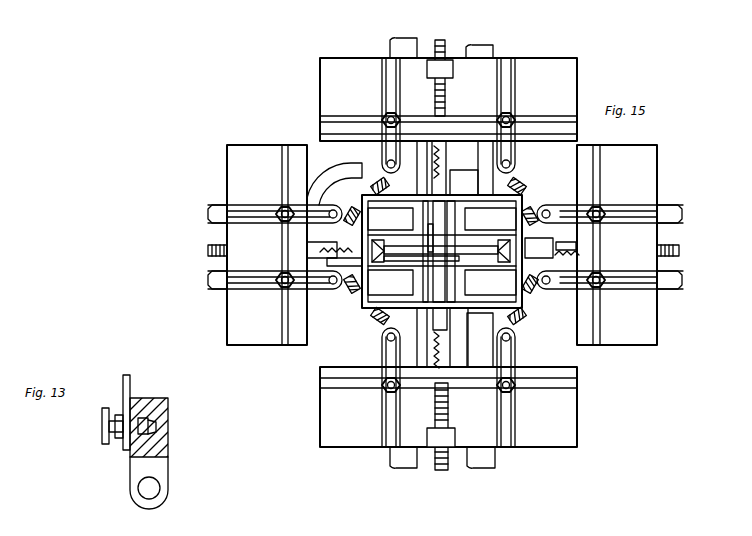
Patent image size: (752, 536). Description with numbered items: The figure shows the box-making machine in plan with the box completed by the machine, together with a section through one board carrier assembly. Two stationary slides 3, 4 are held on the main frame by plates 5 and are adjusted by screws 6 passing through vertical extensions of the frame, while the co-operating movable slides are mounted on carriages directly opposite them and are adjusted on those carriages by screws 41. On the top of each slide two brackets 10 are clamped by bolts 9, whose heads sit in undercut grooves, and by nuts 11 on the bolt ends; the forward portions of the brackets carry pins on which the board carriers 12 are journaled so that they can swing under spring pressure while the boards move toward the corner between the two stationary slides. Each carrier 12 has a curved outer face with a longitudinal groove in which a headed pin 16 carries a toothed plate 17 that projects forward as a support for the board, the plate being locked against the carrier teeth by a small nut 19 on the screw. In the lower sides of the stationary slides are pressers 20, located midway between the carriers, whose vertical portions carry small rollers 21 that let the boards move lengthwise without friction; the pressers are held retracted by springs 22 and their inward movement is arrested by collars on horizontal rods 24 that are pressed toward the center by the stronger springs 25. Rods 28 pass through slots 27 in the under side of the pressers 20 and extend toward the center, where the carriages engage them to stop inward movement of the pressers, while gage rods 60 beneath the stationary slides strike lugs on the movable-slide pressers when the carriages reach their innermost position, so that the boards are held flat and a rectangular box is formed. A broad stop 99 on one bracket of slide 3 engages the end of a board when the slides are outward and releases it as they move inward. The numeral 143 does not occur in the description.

In FIG. 15, the stationary slide 3 is at (267, 245).
In FIG. 15, the stationary slide 4 is at (448, 407).
In FIG. 15, the plate 5 is at (408, 40).
In FIG. 15, the adjusting screw 6 is at (207, 252).
In FIG. 15, the bolt 9 is at (386, 114).
In FIG. 15, the bracket 10 is at (445, 252).
In FIG. 15, the nut 11 is at (384, 128).
In FIG. 15, the board carrier 12 is at (376, 180).
In FIG. 13, the board carrier 12 is at (149, 483).
In FIG. 13, the headed pin 16 is at (102, 428).
In FIG. 15, the plate 17 is at (372, 214).
In FIG. 13, the plate 17 is at (130, 382).
In FIG. 15, the nut 19 is at (394, 312).
In FIG. 13, the nut 19 is at (112, 406).
In FIG. 15, the presser slide 20 is at (326, 262).
In FIG. 15, the roller 21 is at (371, 250).
In FIG. 15, the spring 22 is at (445, 150).
In FIG. 15, the horizontal rod 24 is at (442, 360).
In FIG. 15, the spring 25 is at (386, 251).
In FIG. 15, the longitudinal slot 27 is at (440, 280).
In FIG. 15, the gage rod 28 is at (421, 258).
In FIG. 15, the screw 41 is at (680, 250).
In FIG. 15, the gage rod 60 is at (428, 236).
In FIG. 15, the gage or stop 99 is at (353, 172).
In FIG. 15, the spring seat 143 is at (443, 140).